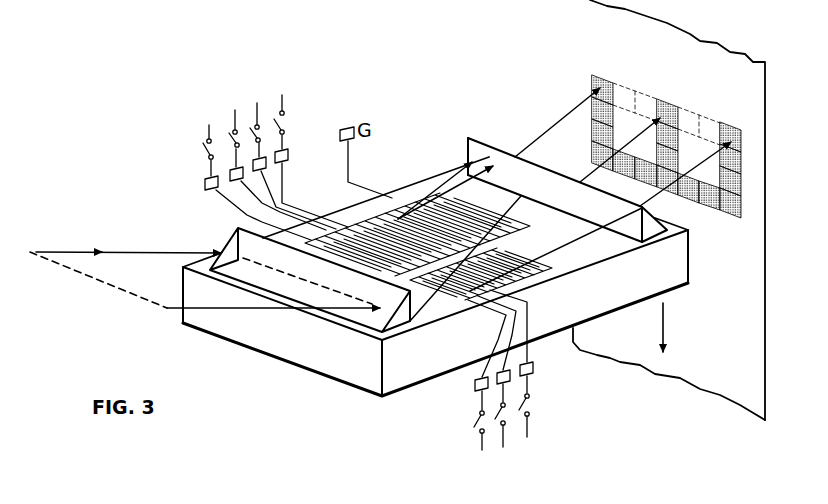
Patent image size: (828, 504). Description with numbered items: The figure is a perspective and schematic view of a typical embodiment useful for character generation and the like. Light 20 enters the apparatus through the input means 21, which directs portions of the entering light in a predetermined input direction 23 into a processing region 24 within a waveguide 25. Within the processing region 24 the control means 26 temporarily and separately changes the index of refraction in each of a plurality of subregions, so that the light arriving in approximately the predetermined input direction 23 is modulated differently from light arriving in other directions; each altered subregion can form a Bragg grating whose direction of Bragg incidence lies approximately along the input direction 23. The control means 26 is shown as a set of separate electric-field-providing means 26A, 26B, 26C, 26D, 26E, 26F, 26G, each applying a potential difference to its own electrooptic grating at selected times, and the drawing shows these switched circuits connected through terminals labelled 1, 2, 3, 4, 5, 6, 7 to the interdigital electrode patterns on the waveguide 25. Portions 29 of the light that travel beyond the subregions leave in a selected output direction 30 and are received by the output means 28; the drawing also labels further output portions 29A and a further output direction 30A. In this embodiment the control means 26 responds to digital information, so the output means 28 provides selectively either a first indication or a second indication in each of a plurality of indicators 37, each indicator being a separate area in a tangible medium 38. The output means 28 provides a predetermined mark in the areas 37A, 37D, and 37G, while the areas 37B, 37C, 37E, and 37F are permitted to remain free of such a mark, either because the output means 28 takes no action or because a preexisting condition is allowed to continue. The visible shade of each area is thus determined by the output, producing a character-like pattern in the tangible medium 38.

The transducer electrode terminal 1 is at (311, 188).
The transducer electrode terminal 2 is at (294, 193).
The transducer electrode terminal 3 is at (276, 198).
The transducer electrode terminal 4 is at (250, 207).
The transducer electrode terminal 5 is at (485, 345).
The transducer electrode terminal 6 is at (497, 340).
The transducer electrode terminal 7 is at (517, 333).
The light 20 is at (118, 250).
The input means 21 is at (237, 241).
The predetermined input direction 23 is at (463, 278).
The processing region 24 is at (364, 212).
The waveguide 25 is at (521, 227).
The control means 26 is at (363, 241).
The electric-field-providing means 26A is at (281, 128).
The electric-field-providing means 26B is at (252, 137).
The electric-field-providing means 26C is at (230, 147).
The electric-field-providing means 26D is at (199, 148).
The electric-field-providing means 26E is at (477, 430).
The electric-field-providing means 26F is at (498, 418).
The electric-field-providing means 26G is at (531, 407).
The output means 28 is at (533, 104).
The portions of the light 29 is at (462, 172).
The output light beam 29A is at (557, 110).
The selected output direction 30 is at (494, 170).
The prism end face 30A is at (553, 130).
The indicators 37 is at (661, 116).
The separate area 37A is at (597, 72).
The separate area 37B is at (610, 75).
The separate area 37C is at (642, 88).
The separate area 37D is at (657, 92).
The separate area 37E is at (692, 108).
The separate area 37F is at (712, 118).
The separate area 37G is at (722, 124).
The tangible medium 38 is at (725, 293).